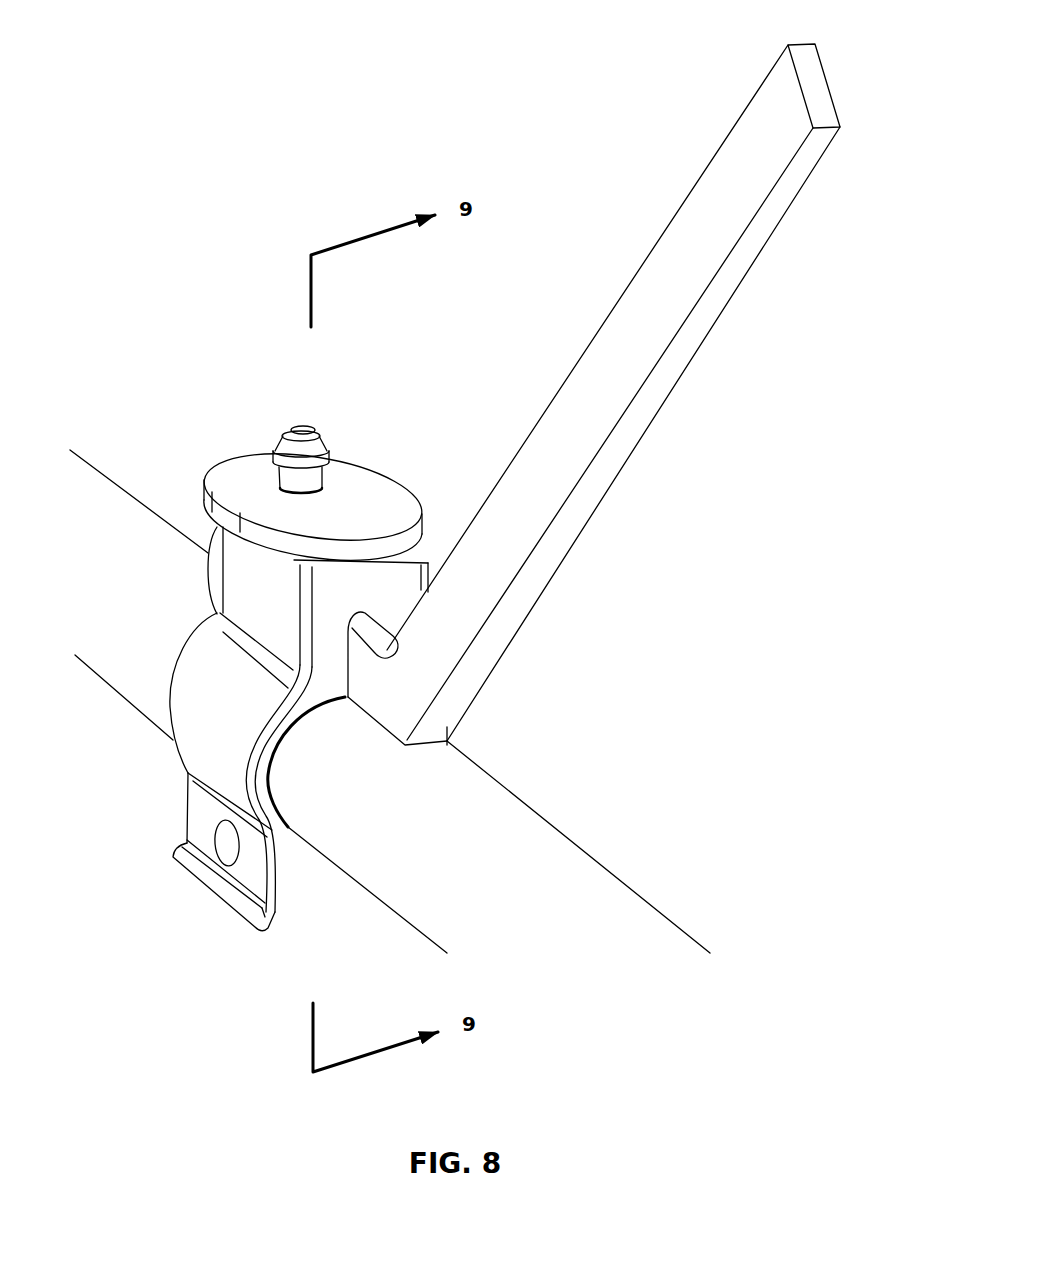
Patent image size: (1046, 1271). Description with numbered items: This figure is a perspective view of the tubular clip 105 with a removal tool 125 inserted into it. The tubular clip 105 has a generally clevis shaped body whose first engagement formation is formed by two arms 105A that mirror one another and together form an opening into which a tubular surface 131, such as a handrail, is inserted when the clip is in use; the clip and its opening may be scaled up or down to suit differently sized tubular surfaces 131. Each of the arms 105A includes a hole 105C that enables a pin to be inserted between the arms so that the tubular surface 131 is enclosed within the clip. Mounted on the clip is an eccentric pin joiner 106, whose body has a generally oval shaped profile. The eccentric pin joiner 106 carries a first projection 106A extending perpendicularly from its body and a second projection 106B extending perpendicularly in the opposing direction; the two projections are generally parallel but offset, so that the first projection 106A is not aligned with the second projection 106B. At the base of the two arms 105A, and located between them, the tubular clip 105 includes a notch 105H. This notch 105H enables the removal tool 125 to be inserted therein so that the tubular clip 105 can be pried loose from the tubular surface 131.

The tubular clip 105 is at (255, 595).
The arms 105A is at (253, 868).
The hole 105C is at (226, 842).
The notch 105H is at (343, 650).
The eccentric pin joiner 106 is at (368, 497).
The first projection 106A is at (297, 423).
The second projection 106B is at (301, 472).
The removal tool 125 is at (662, 368).
The tubular surface 131 is at (490, 842).